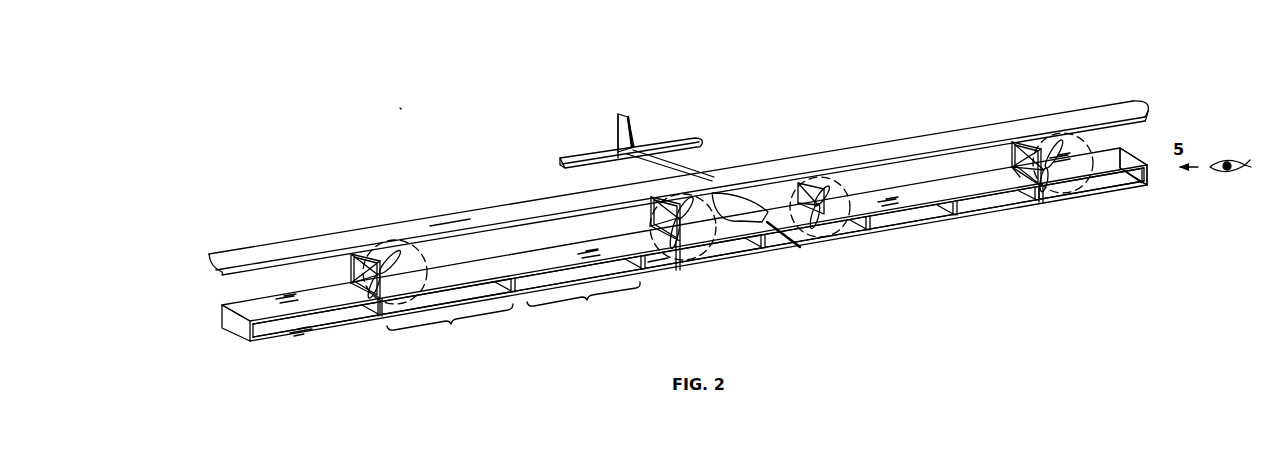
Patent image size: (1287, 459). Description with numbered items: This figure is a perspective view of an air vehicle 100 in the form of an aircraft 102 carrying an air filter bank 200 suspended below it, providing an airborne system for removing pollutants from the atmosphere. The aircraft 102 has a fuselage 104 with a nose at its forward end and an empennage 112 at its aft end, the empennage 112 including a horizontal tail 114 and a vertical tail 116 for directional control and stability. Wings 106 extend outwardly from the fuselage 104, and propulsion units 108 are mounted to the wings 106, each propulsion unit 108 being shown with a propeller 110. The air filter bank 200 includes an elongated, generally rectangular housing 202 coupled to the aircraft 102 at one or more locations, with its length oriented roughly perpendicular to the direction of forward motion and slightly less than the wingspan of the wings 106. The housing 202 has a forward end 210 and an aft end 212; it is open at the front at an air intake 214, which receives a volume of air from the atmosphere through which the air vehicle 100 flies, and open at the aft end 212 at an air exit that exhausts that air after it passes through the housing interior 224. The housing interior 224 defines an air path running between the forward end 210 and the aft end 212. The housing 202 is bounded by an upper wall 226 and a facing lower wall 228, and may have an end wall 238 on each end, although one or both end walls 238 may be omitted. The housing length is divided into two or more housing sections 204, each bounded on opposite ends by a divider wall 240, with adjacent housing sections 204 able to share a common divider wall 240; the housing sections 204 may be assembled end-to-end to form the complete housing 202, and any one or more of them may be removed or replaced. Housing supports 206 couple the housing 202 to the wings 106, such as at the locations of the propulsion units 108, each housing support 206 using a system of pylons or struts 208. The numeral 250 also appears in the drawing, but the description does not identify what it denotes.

The air vehicle 100 is at (402, 108).
The aircraft 102 is at (898, 143).
The fuselage 104 is at (690, 173).
The wings 106 is at (462, 222).
The propulsion units 108 is at (365, 258).
The propeller 110 is at (400, 248).
The empennage 112 is at (617, 102).
The horizontal tail 114 is at (659, 140).
The vertical tail 116 is at (613, 131).
The air filter bank 200 is at (216, 301).
The housing 202 is at (252, 352).
The housing sections 204 is at (513, 317).
The housing support 206 is at (378, 302).
The struts 208 is at (1010, 172).
The forward end 210 is at (240, 325).
The aft end 212 is at (222, 314).
The air intake 214 is at (886, 229).
The housing interior 224 is at (930, 224).
The upper wall 226 is at (282, 297).
The lower wall 228 is at (302, 328).
The end wall 238 is at (1148, 190).
The divider wall 240 is at (513, 293).
The beam central portion 250 is at (660, 266).